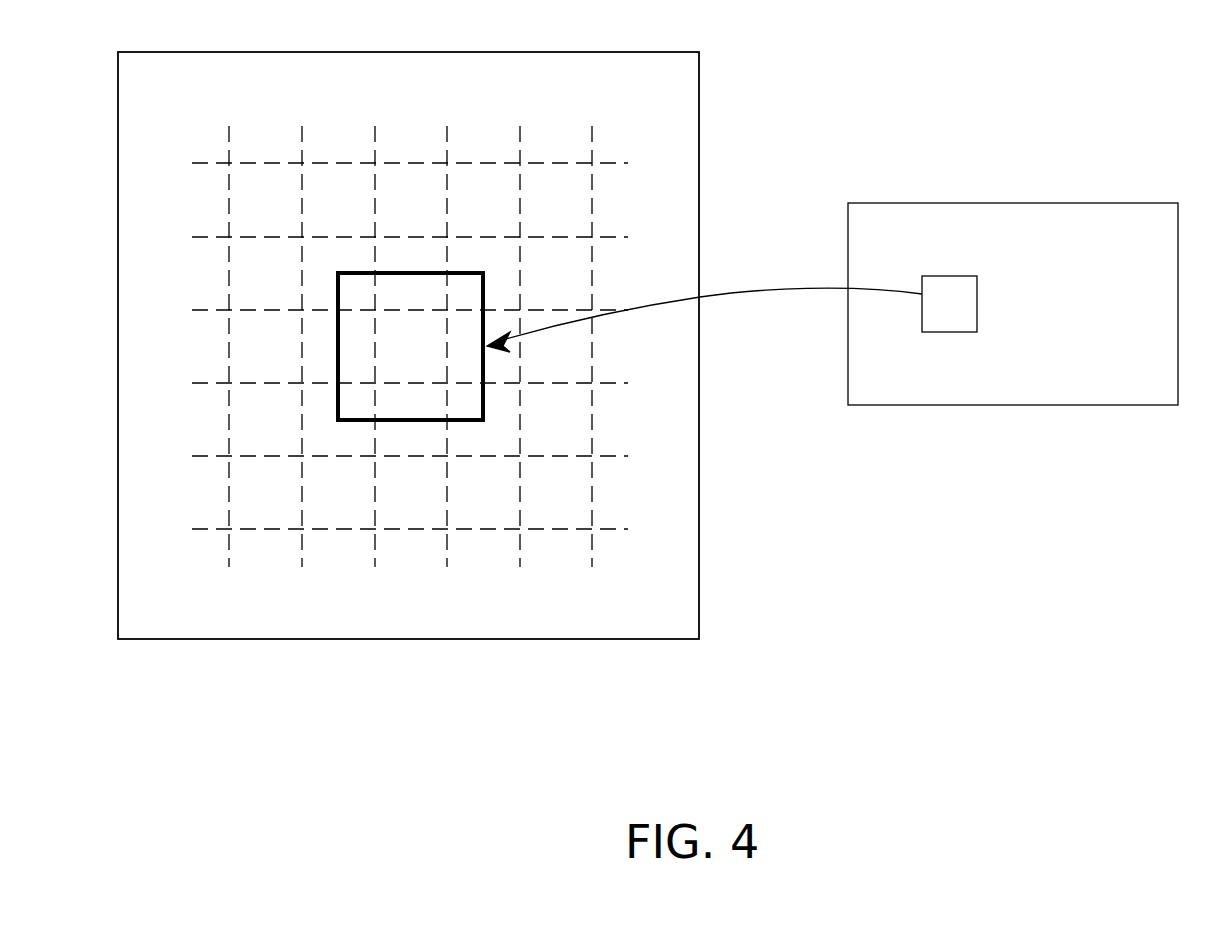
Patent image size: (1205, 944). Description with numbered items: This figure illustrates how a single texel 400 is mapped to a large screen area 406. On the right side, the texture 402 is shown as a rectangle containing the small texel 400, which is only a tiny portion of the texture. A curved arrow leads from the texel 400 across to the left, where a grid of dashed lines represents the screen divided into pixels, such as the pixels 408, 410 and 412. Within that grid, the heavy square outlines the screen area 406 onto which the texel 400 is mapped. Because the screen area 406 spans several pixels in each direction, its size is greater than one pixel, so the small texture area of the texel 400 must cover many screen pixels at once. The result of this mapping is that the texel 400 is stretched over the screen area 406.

The texel 400 is at (950, 295).
The texture 402 is at (1105, 405).
The screen area 406 is at (487, 300).
The pixel 408 is at (246, 516).
The pixel 410 is at (338, 188).
The pixel 412 is at (535, 512).